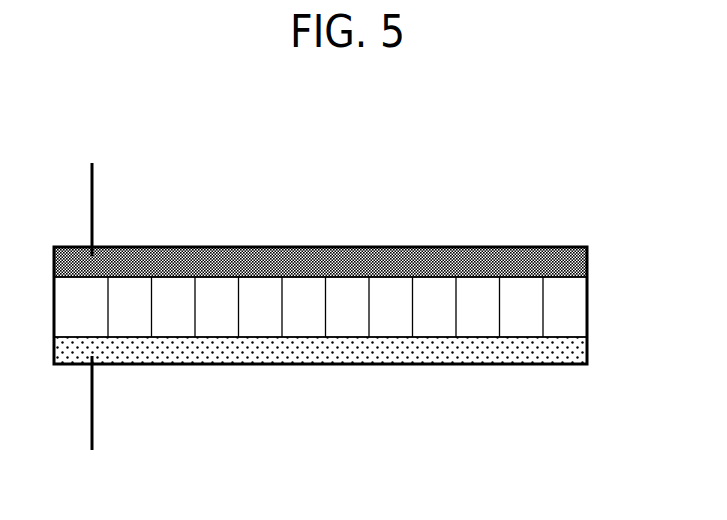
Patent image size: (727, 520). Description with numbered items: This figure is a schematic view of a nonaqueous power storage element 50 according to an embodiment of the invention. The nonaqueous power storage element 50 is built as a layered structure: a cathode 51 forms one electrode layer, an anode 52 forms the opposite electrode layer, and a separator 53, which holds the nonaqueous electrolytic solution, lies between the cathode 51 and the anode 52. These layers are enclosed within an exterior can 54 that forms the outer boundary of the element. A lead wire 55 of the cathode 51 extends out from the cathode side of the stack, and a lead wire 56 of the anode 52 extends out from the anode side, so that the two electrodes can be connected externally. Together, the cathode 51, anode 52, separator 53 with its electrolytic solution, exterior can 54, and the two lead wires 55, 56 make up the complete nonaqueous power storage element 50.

The nonaqueous power storage element 50 is at (618, 116).
The cathode 51 is at (321, 262).
The anode 52 is at (320, 350).
The separator 53 is at (575, 304).
The exterior can 54 is at (552, 364).
The lead wire of the cathode 55 is at (93, 209).
The lead wire of the anode 56 is at (93, 403).